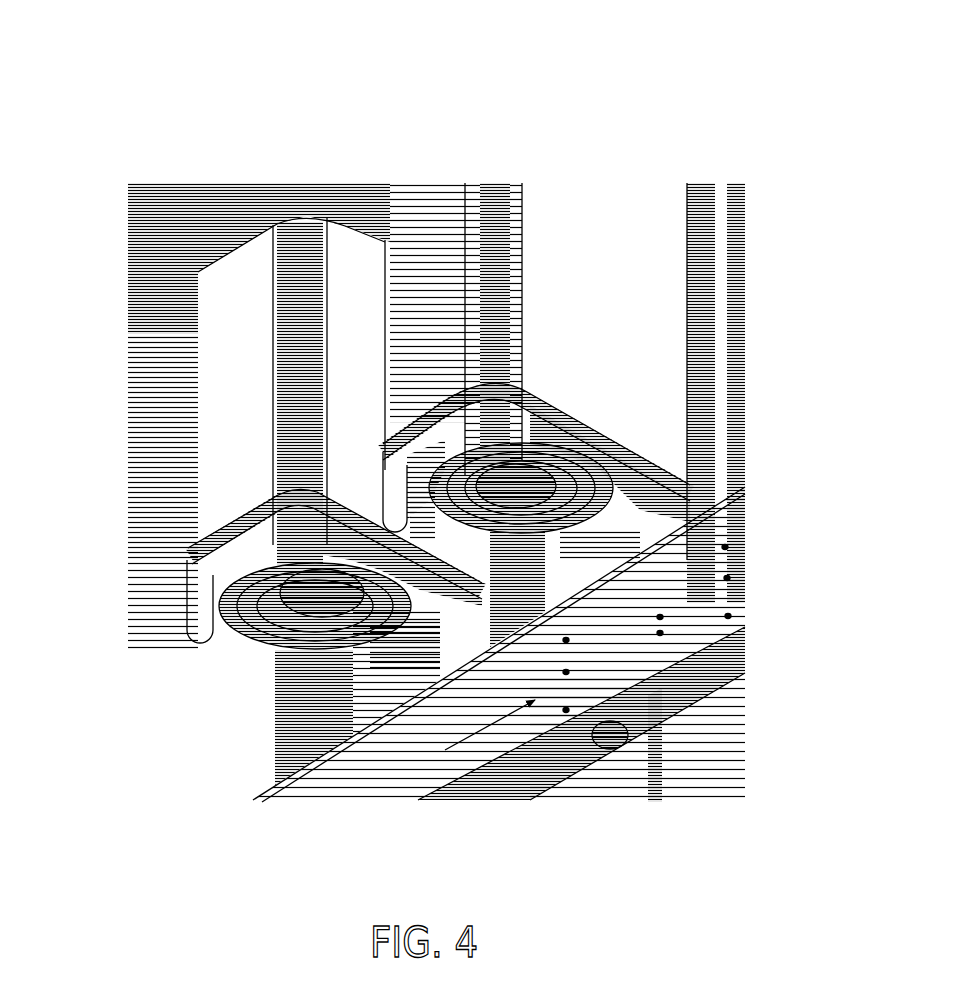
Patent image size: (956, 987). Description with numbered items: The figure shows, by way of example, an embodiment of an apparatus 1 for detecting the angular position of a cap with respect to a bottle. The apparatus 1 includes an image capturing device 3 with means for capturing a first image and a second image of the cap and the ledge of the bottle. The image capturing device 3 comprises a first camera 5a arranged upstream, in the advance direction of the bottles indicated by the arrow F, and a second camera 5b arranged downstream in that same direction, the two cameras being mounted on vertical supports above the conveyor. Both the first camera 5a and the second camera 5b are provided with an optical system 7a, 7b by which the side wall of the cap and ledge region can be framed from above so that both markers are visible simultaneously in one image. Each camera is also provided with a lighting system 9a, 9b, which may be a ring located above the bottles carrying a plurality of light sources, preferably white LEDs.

The apparatus 1 is at (438, 125).
The image capturing device 3 is at (345, 252).
The first camera 5a is at (223, 308).
The second camera 5b is at (587, 250).
The optical system 7a is at (273, 643).
The optical system 7b is at (380, 512).
The lighting system 9a is at (230, 613).
The lighting system 9b is at (567, 545).